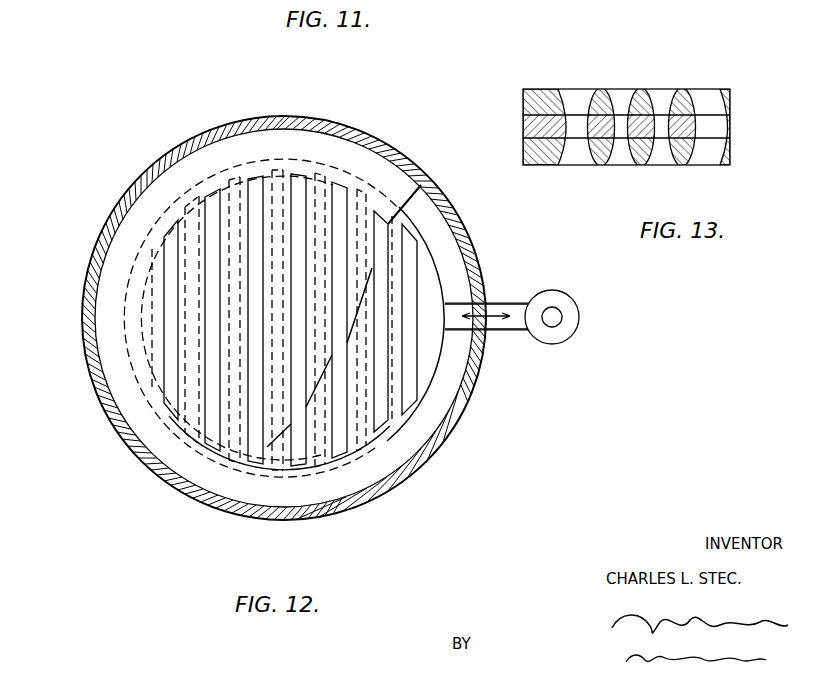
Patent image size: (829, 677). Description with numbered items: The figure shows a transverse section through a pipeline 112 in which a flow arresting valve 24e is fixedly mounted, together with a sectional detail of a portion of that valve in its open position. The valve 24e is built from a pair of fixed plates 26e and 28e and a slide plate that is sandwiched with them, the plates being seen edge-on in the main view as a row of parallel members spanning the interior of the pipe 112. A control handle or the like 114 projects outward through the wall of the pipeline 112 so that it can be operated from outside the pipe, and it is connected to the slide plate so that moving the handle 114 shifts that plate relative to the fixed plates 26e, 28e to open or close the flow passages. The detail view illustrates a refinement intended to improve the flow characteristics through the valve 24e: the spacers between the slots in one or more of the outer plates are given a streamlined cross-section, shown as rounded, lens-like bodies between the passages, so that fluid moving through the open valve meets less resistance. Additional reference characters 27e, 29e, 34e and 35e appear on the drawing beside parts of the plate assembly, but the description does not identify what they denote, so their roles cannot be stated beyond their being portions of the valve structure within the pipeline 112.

In FIG. 12, the flow arresting valve 24e is at (173, 188).
In FIG. 12, the fixed plate 26e is at (220, 480).
In FIG. 13, the fixed plate 26e is at (635, 90).
In FIG. 12, the pleated filter sheet 27e is at (168, 263).
In FIG. 13, the pleated filter sheet 27e is at (708, 90).
In FIG. 12, the fixed plate 28e is at (306, 495).
In FIG. 13, the fixed plate 28e is at (633, 157).
In FIG. 12, the spacer member 29e is at (405, 390).
In FIG. 13, the spacer member 29e is at (660, 156).
In FIG. 12, the filter cylinder 34e is at (145, 303).
In FIG. 13, the filter cylinder 34e is at (523, 127).
In FIG. 12, the inner perforated wall 35e is at (165, 390).
In FIG. 13, the inner perforated wall 35e is at (701, 135).
In FIG. 12, the pipeline 112 is at (402, 481).
In FIG. 12, the control handle 114 is at (570, 334).